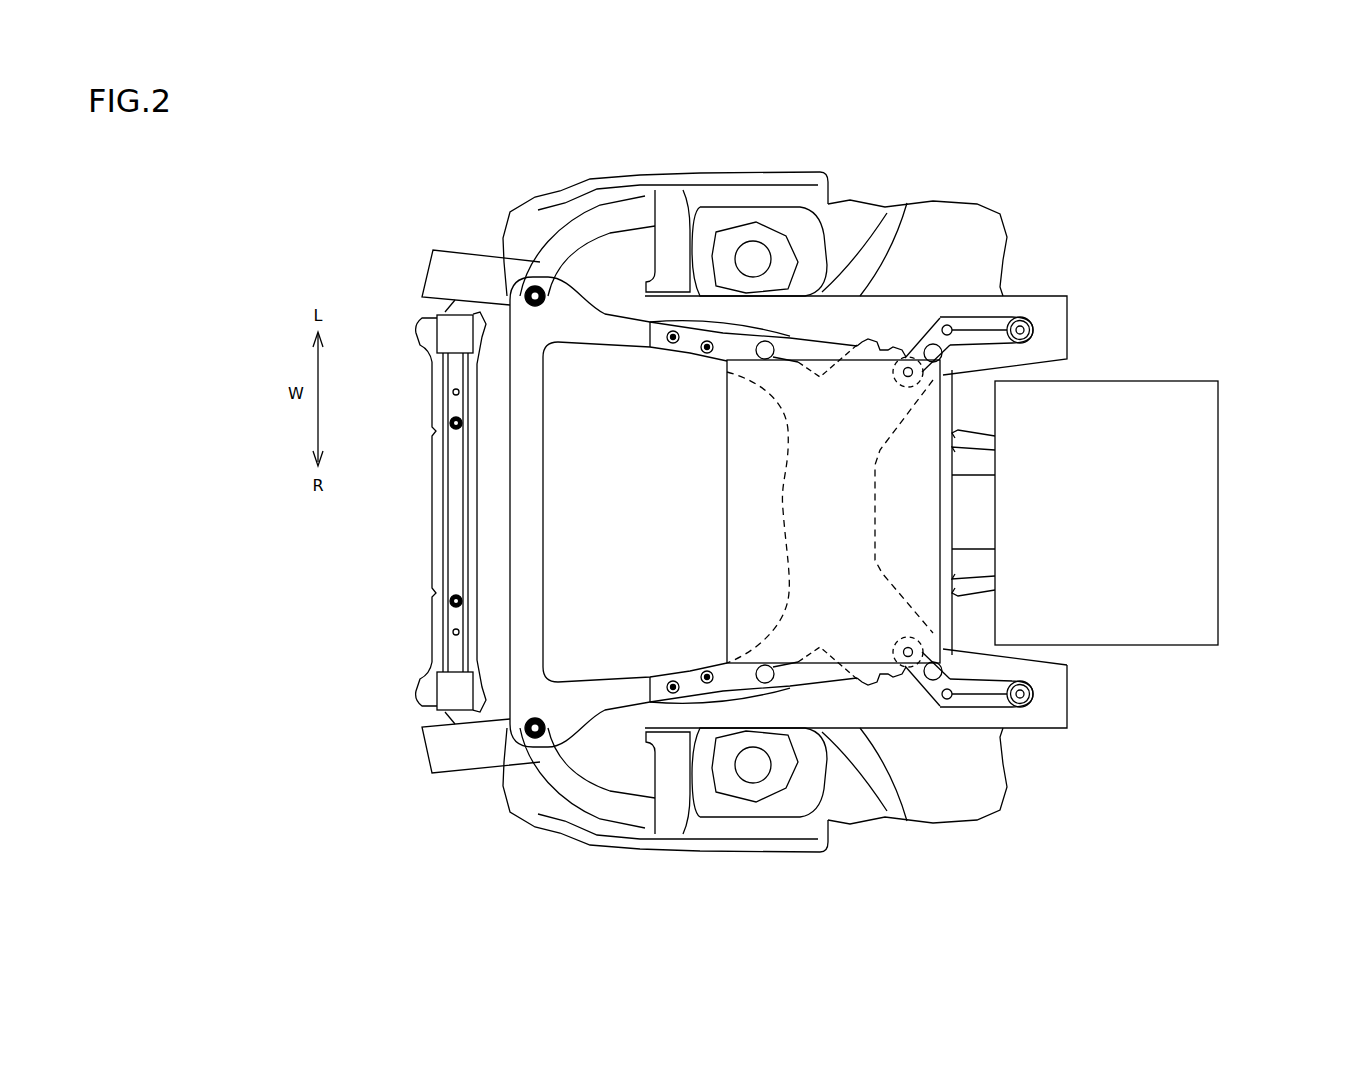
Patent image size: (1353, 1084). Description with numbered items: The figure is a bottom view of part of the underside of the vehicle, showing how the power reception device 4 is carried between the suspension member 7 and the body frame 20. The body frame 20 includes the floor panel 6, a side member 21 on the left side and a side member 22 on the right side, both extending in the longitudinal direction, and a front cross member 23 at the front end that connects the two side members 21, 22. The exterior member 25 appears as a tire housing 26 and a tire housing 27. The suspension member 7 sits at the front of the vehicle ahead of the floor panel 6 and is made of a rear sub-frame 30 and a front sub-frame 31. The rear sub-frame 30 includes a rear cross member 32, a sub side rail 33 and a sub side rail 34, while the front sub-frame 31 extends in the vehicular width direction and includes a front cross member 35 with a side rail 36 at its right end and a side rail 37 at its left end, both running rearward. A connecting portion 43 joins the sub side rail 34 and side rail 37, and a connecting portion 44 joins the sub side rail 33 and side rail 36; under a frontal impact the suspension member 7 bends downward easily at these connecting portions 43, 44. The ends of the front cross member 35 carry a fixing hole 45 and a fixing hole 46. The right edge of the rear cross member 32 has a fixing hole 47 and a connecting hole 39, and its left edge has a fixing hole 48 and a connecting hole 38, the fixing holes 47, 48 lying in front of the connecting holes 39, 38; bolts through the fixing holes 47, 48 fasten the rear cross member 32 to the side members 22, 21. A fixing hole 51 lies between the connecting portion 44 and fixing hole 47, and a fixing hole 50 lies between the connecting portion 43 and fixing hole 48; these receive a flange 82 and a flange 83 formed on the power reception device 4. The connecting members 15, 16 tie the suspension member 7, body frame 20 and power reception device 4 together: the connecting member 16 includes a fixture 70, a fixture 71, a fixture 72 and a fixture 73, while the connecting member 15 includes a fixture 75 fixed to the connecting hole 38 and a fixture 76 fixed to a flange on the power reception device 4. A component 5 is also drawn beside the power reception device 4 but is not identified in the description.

The power reception device 4 is at (798, 511).
The battery unit 5 is at (1202, 506).
The floor panel 6 is at (987, 558).
The suspension member 7 is at (546, 512).
The connecting member 15 is at (985, 297).
The connecting member 16 is at (914, 770).
The body frame 20 is at (495, 513).
The side member 21 is at (435, 273).
The side member 22 is at (437, 755).
The front cross member 23 is at (434, 538).
The exterior member 25 is at (628, 238).
The tire housing 26 is at (712, 790).
The tire housing 27 is at (712, 207).
The rear sub-frame 30 is at (803, 449).
The front sub-frame 31 is at (556, 512).
The rear cross member 32 is at (803, 528).
The sub side rail 33 is at (713, 668).
The sub side rail 34 is at (714, 360).
The front cross member 35 is at (530, 451).
The side rail 36 is at (592, 692).
The side rail 37 is at (592, 333).
The connecting hole 38 is at (915, 249).
The connecting hole 39 is at (915, 775).
The connecting portion 43 is at (648, 350).
The connecting portion 44 is at (648, 687).
The fixing hole 45 is at (534, 740).
The fixing hole 46 is at (534, 284).
The fixing hole 47 is at (857, 681).
The fixing hole 48 is at (857, 343).
The fixing hole 50 is at (774, 237).
The fixing hole 51 is at (774, 788).
The fixture 70 is at (908, 667).
The fixture 71 is at (1044, 771).
The fixture 72 is at (1033, 698).
The fixture 73 is at (1067, 670).
The fixture 75 is at (908, 357).
The fixture 76 is at (945, 316).
The flange 82 is at (766, 684).
The flange 83 is at (766, 341).